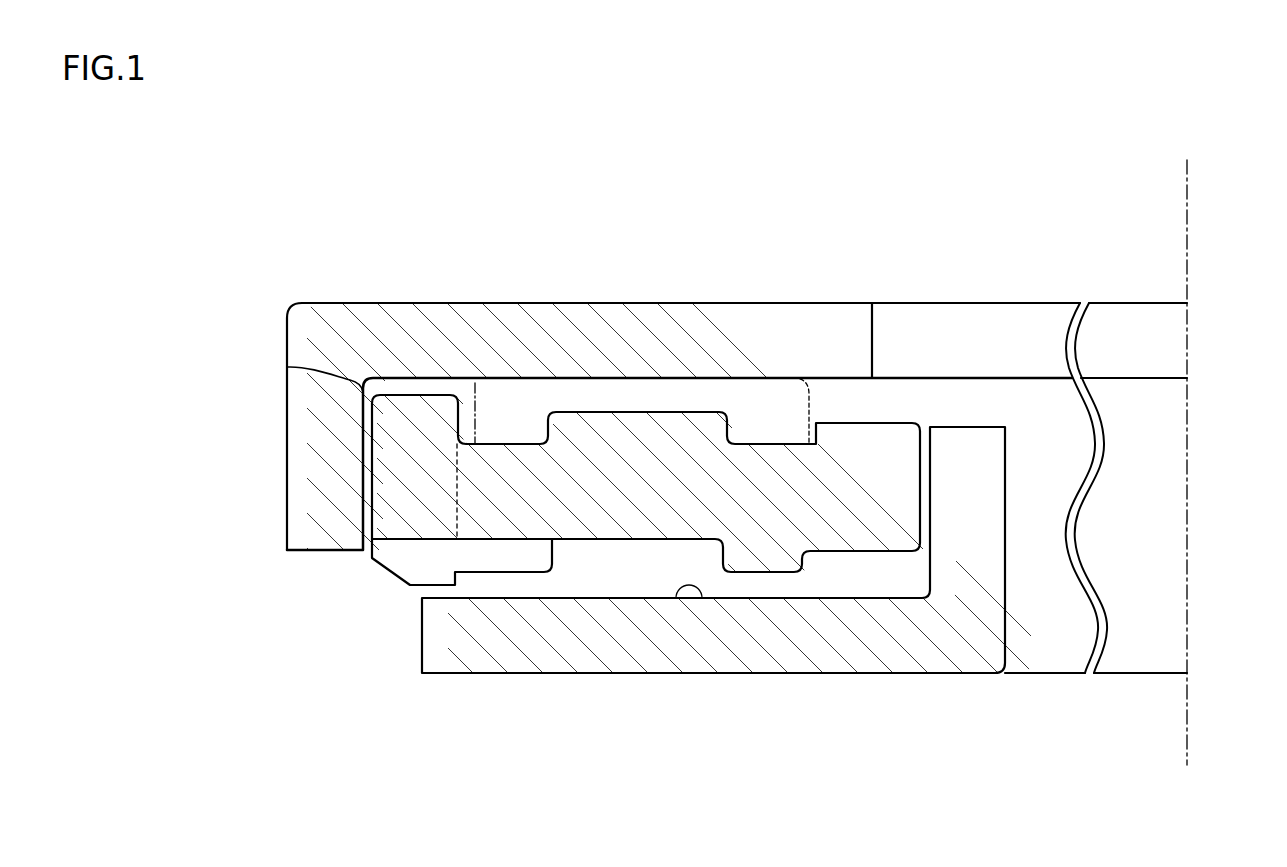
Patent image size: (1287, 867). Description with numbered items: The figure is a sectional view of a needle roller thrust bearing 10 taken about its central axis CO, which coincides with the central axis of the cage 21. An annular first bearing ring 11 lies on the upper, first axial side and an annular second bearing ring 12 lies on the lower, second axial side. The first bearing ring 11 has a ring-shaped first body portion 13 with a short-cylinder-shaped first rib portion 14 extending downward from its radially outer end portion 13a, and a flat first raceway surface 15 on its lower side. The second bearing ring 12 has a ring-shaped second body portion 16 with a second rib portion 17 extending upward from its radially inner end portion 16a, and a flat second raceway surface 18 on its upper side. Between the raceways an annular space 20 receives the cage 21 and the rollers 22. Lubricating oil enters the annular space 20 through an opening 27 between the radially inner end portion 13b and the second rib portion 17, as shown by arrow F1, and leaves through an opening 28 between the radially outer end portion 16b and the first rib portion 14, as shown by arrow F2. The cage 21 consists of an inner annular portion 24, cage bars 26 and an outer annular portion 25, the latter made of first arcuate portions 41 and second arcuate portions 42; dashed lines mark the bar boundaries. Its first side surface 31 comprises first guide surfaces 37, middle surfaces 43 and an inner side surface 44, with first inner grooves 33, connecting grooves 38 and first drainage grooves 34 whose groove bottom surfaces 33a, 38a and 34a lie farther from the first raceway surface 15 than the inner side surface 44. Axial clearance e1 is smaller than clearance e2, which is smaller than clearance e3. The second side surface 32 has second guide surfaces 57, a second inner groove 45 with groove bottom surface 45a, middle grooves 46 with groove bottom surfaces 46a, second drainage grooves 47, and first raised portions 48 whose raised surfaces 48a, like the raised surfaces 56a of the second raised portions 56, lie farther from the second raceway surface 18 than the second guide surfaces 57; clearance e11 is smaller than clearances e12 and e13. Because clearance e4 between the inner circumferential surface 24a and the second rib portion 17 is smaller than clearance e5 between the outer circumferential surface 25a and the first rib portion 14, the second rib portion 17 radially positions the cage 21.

The needle roller thrust bearing 10 is at (285, 409).
The first bearing ring 11 is at (714, 386).
The second bearing ring 12 is at (649, 674).
The first body portion 13 is at (660, 333).
The radially outer end portion 13a is at (318, 303).
The radially inner end portion 13b is at (848, 378).
The first rib portion 14 is at (300, 388).
The first raceway surface 15 is at (752, 420).
The second body portion 16 is at (551, 648).
The radially inner end portion 16a is at (973, 674).
The radially outer end portion 16b is at (424, 674).
The second rib portion 17 is at (972, 578).
The second raceway surface 18 is at (702, 598).
The annular space 20 is at (362, 527).
The cage 21 is at (373, 380).
The rollers 22 is at (505, 387).
The inner annular portion 24 is at (952, 488).
The inner circumferential surface 24a is at (950, 447).
The outer annular portion 25 is at (364, 512).
The outer circumferential surface 25a is at (361, 457).
The cage bar 26 is at (678, 473).
The opening 27 is at (948, 340).
The opening 28 is at (350, 622).
The first side surface 31 is at (566, 410).
The second side surface 32 is at (755, 574).
The first inner groove 33 is at (771, 444).
The groove bottom surface 33a is at (793, 378).
The first drainage groove 34 is at (431, 421).
The groove bottom surface 34a is at (297, 366).
The first guide surface 37 is at (434, 394).
The connecting groove 38 is at (523, 426).
The groove bottom surface 38a is at (488, 443).
The first arcuate portion 41 is at (383, 391).
The second arcuate portion 42 is at (387, 503).
The middle surface 43 is at (647, 411).
The inner side surface 44 is at (866, 420).
The second inner groove 45 is at (896, 554).
The groove bottom surface 45a is at (838, 553).
The middle groove 46 is at (581, 541).
The groove bottom surface 46a is at (612, 546).
The second drainage groove 47 is at (407, 557).
The first raised portion 48 is at (783, 558).
The raised surface 48a is at (731, 573).
The second raised portion 56 is at (497, 560).
The raised surface 56a is at (511, 599).
The second guide surface 57 is at (434, 600).
The axial clearance e1 is at (400, 406).
The axial clearance e2 is at (604, 423).
The axial clearance e3 is at (835, 434).
The clearance e4 is at (941, 518).
The clearance e5 is at (320, 470).
The axial clearance e11 is at (438, 609).
The axial clearance e12 is at (638, 539).
The axial clearance e13 is at (770, 609).
The arrow F1 is at (884, 396).
The arrow F2 is at (373, 590).
The central axis CO is at (1187, 212).